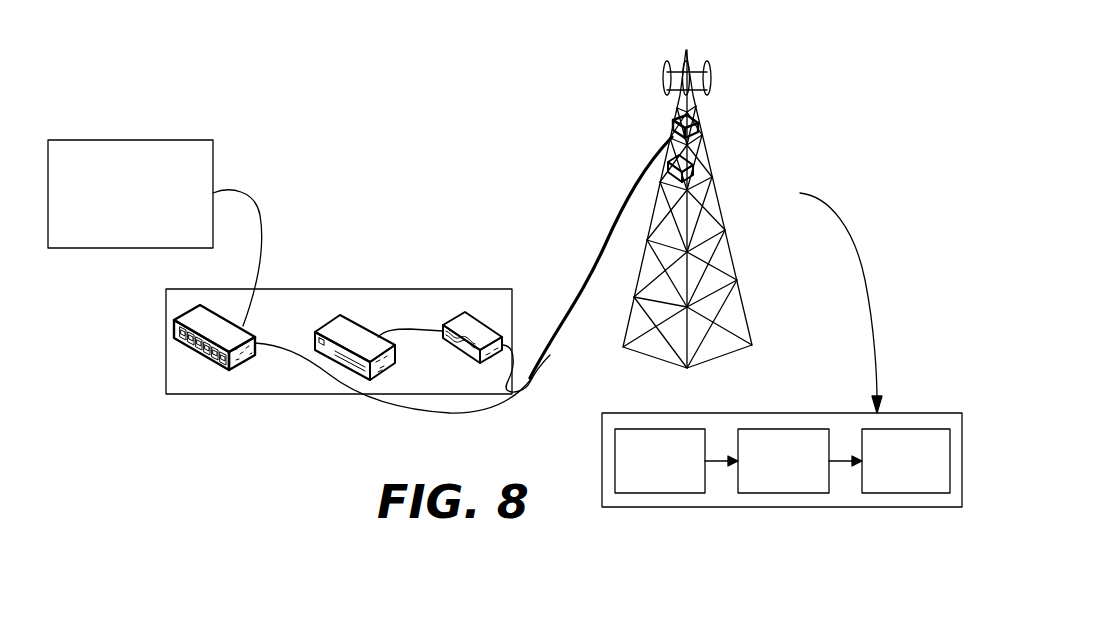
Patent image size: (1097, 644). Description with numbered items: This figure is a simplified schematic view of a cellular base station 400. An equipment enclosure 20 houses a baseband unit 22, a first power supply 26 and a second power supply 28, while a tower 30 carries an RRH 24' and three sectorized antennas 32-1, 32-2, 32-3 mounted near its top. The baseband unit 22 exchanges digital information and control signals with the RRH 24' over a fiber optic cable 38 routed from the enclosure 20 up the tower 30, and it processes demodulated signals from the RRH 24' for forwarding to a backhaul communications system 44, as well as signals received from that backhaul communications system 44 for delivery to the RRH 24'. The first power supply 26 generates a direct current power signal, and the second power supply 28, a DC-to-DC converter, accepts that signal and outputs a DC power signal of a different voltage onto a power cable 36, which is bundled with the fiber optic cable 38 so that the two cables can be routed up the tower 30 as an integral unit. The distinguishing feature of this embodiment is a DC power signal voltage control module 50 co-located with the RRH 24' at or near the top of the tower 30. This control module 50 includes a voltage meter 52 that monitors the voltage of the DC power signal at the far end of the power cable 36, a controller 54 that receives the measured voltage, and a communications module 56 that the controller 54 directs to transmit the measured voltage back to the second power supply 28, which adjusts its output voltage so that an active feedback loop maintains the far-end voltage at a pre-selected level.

The cellular base station 400 is at (503, 289).
The backhaul communications system 44 is at (155, 233).
The equipment enclosure 20 is at (167, 358).
The baseband unit 22 is at (247, 362).
The first power supply 26 is at (355, 332).
The second power supply 28 is at (470, 318).
The power cable 36 is at (515, 342).
The fiber optic cable 38 is at (413, 413).
The tower 30 is at (733, 258).
The antenna 32-1 is at (667, 92).
The antenna 32-2 is at (698, 97).
The antenna 32-3 is at (709, 64).
The RRH 24' is at (645, 116).
The DC power signal voltage control module 50 is at (782, 338).
The voltage meter 52 is at (660, 461).
The controller 54 is at (783, 461).
The communications module 56 is at (906, 461).